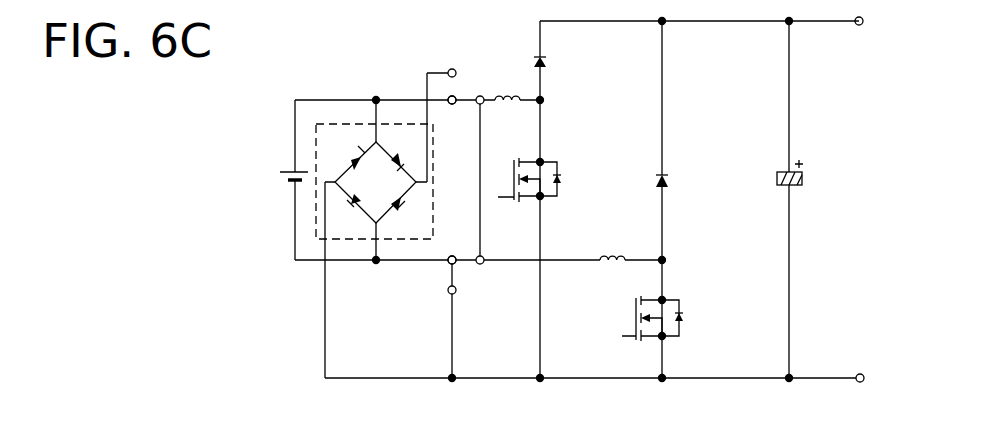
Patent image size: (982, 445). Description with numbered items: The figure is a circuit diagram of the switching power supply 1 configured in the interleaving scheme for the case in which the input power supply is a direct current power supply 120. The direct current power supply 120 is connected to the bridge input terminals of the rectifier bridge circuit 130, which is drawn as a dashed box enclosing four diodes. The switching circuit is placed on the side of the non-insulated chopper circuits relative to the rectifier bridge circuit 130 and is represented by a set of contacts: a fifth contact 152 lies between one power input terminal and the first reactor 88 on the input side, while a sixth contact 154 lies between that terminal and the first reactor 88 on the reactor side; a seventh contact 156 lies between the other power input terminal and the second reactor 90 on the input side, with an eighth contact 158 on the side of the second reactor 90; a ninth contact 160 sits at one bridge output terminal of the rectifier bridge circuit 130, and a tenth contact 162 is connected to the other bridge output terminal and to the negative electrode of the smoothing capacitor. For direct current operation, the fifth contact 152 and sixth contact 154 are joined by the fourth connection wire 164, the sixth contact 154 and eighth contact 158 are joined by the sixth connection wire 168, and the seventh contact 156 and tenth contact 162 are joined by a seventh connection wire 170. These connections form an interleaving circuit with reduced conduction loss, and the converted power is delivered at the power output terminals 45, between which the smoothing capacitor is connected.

The switching power supply 1 is at (368, 72).
The power output terminals 45 is at (861, 24).
The first reactor 88 is at (503, 80).
The second reactor 90 is at (620, 242).
The direct current power supply 120 is at (268, 180).
The rectifier bridge circuit 130 is at (316, 239).
The fifth contact 152 is at (452, 104).
The sixth contact 154 is at (481, 104).
The seventh contact 156 is at (452, 256).
The eighth contact 158 is at (482, 257).
The ninth contact 160 is at (451, 69).
The tenth contact 162 is at (448, 290).
The fourth connection wire 164 is at (468, 97).
The sixth connection wire 168 is at (478, 180).
The seventh connection wire 170 is at (453, 264).